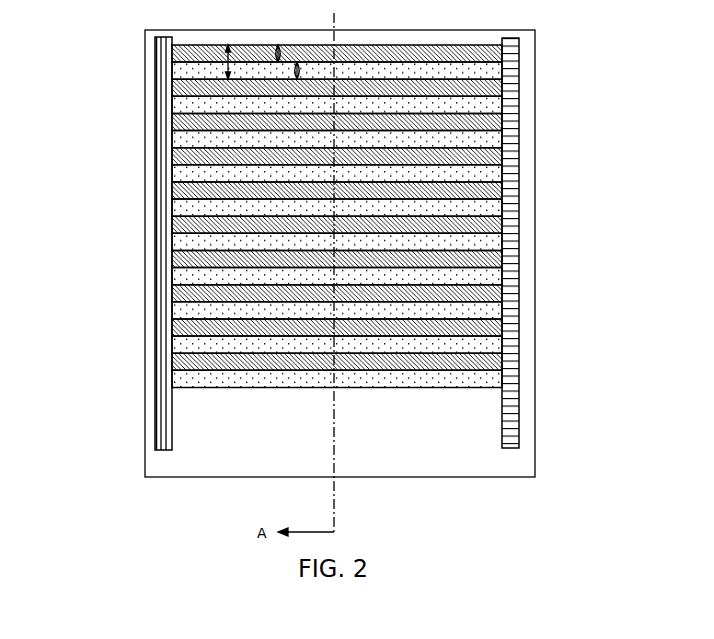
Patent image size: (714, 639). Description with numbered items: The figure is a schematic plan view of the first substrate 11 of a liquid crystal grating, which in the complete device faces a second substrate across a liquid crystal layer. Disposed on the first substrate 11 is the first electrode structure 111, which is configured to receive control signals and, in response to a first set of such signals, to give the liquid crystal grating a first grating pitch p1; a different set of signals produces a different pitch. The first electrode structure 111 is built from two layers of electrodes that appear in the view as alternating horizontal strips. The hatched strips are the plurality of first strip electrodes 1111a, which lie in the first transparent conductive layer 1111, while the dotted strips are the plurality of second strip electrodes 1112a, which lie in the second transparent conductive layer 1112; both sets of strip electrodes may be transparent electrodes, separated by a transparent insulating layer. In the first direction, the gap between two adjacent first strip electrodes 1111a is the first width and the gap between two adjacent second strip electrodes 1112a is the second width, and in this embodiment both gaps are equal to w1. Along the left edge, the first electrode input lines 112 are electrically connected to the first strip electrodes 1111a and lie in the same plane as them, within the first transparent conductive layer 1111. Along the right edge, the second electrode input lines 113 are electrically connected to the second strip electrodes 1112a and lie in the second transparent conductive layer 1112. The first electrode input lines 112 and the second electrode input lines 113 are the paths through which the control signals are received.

The first substrate 11 is at (513, 462).
The first electrode structure 111 is at (337, 196).
The first transparent conductive layer 1111 is at (268, 187).
The first strip electrode 1111a is at (193, 53).
The second transparent conductive layer 1112 is at (405, 196).
The second strip electrode 1112a is at (457, 70).
The first electrode input lines 112 is at (162, 410).
The second electrode input lines 113 is at (508, 411).
The first grating pitch p1 is at (230, 62).
The first width / second width w1 is at (279, 47).